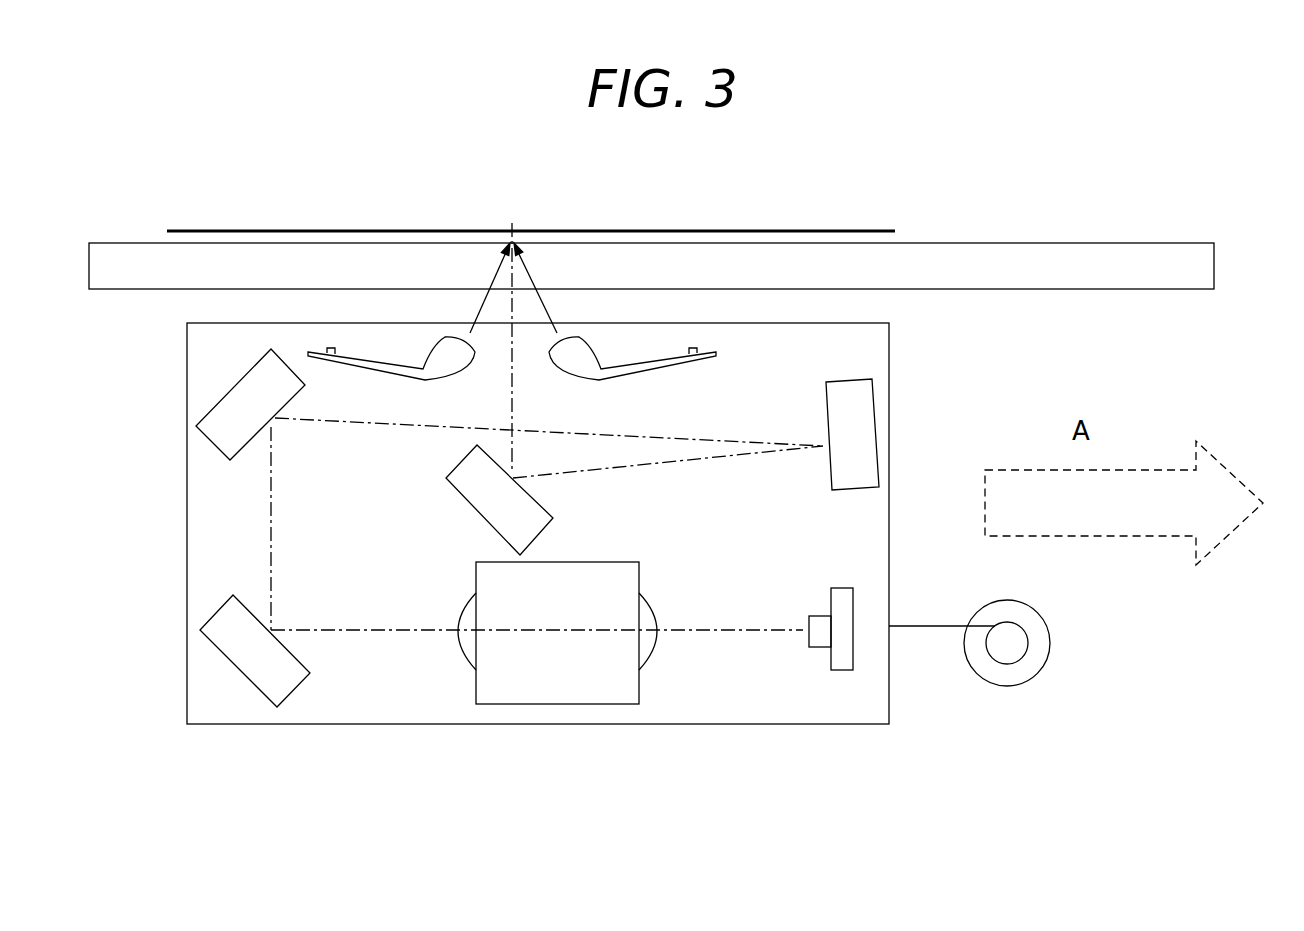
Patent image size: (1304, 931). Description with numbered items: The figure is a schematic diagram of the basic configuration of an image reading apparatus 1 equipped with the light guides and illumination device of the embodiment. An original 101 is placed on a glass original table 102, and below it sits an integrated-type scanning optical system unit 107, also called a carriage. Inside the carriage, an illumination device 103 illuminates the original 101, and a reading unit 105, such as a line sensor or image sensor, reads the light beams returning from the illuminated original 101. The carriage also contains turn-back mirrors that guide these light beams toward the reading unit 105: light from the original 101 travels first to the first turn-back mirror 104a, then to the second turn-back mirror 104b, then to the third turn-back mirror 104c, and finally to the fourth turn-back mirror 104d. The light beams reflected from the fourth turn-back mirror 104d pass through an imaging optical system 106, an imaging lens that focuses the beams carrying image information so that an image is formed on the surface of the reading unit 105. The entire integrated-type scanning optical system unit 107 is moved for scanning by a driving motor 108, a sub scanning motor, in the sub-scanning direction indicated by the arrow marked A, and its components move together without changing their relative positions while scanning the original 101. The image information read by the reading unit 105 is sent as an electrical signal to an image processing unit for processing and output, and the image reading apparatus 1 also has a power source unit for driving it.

The image reading apparatus 1 is at (120, 222).
The original 101 is at (594, 231).
The glass original table 102 is at (989, 253).
The illumination device 103 is at (430, 368).
The first turn-back mirror 104a is at (488, 507).
The second turn-back mirror 104b is at (867, 395).
The third turn-back mirror 104c is at (222, 422).
The fourth turn-back mirror 104d is at (285, 682).
The reading unit 105 is at (842, 658).
The imaging optical system 106 is at (605, 692).
The integrated-type scanning optical system unit 107 is at (187, 655).
The driving motor 108 is at (1008, 675).